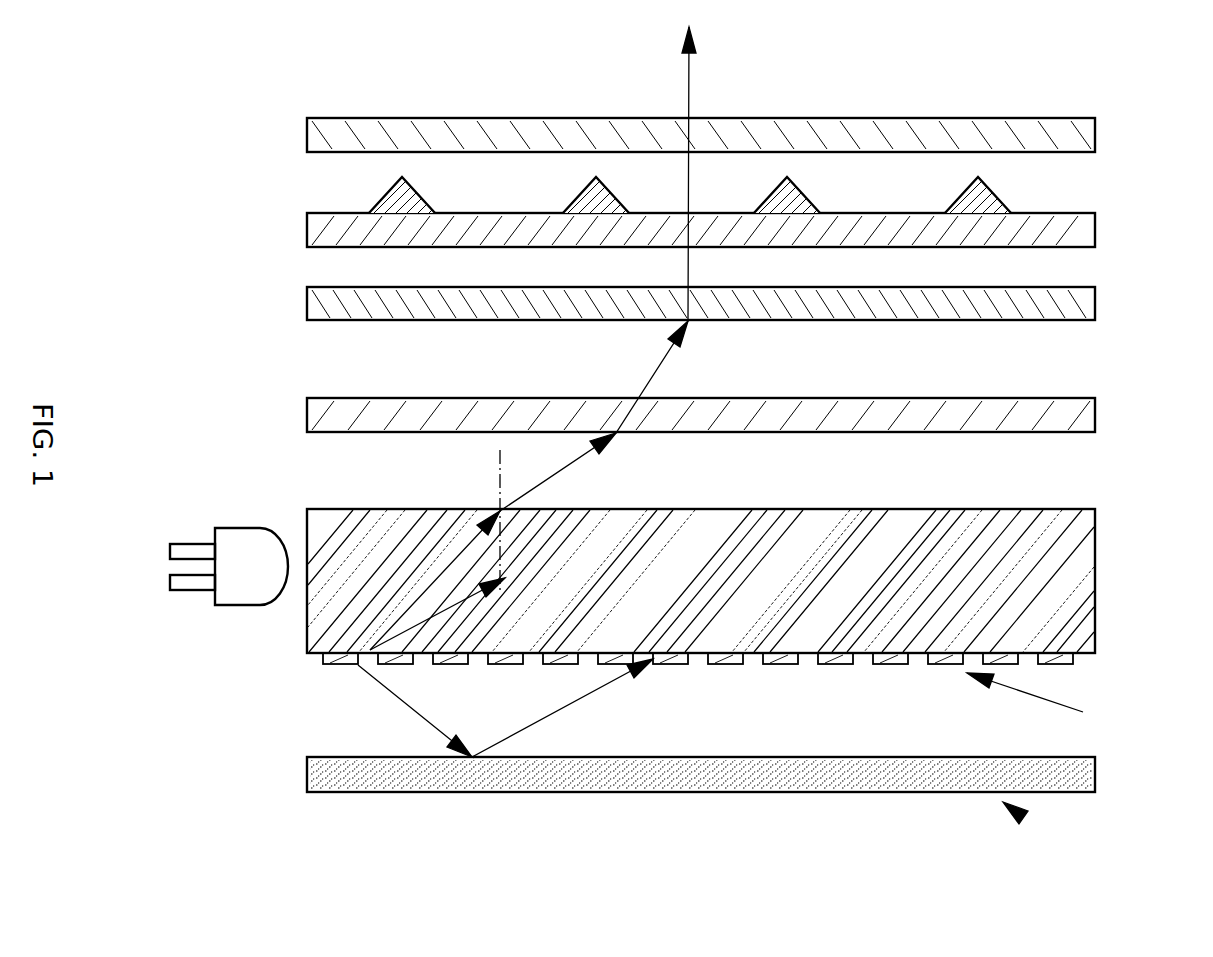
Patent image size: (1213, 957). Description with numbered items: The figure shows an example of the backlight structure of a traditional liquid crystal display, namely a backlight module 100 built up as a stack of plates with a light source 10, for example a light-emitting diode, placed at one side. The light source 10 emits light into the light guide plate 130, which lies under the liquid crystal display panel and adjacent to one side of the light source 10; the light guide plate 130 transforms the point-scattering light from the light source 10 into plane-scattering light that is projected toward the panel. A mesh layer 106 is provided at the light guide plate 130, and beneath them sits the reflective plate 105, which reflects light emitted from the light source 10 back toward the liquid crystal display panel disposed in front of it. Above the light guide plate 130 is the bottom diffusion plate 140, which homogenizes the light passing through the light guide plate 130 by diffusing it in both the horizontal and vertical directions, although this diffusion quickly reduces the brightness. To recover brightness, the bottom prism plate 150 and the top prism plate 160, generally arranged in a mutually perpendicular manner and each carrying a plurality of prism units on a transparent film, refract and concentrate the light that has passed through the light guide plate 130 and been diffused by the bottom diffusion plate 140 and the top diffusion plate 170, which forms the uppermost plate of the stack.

The light source 10 is at (247, 550).
The backlight module 100 is at (1003, 802).
The reflective plate 105 is at (1068, 784).
The mesh layer 106 is at (1062, 670).
The light guide plate 130 is at (1068, 566).
The bottom diffusion plate 140 is at (1068, 420).
The bottom prism plate 150 is at (1094, 298).
The top prism plate 160 is at (1093, 224).
The top diffusion plate 170 is at (1045, 130).